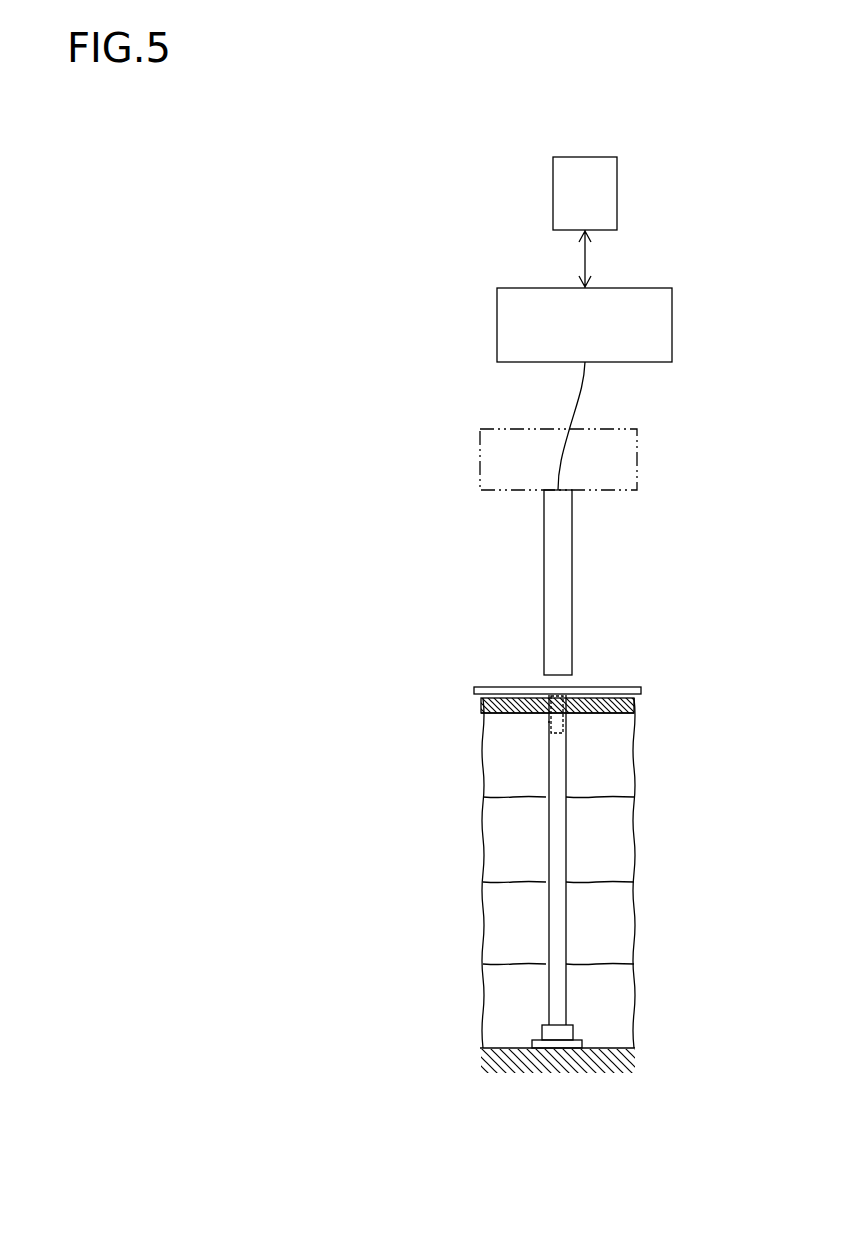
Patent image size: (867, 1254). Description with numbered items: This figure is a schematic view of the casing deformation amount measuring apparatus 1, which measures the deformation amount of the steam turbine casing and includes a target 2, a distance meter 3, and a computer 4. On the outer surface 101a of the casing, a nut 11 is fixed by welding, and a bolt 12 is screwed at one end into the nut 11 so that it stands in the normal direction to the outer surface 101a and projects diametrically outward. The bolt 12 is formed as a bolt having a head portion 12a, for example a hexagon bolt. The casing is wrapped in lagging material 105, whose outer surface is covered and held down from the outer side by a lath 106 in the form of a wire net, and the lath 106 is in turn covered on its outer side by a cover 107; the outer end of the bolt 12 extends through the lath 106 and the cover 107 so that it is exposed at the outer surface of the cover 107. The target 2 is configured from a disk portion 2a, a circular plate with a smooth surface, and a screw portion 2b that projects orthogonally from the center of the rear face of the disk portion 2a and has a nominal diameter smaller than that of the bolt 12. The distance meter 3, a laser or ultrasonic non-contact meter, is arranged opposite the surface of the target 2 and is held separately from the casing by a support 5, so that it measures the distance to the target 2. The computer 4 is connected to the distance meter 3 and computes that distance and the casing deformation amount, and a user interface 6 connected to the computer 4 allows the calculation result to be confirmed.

The casing deformation amount measuring apparatus 1 is at (713, 566).
The target 2 is at (430, 685).
The disk portion 2a is at (474, 691).
The screw portion 2b is at (548, 722).
The distance meter 3 is at (544, 582).
The computer 4 is at (497, 325).
The support 5 is at (480, 459).
The user interface 6 is at (553, 194).
The nut 11 is at (573, 1033).
The bolt 12 is at (567, 868).
The head portion 12a is at (558, 697).
The outer surface 101a is at (500, 1047).
The lagging material 105 is at (492, 853).
The lath 106 is at (618, 713).
The cover 107 is at (633, 705).